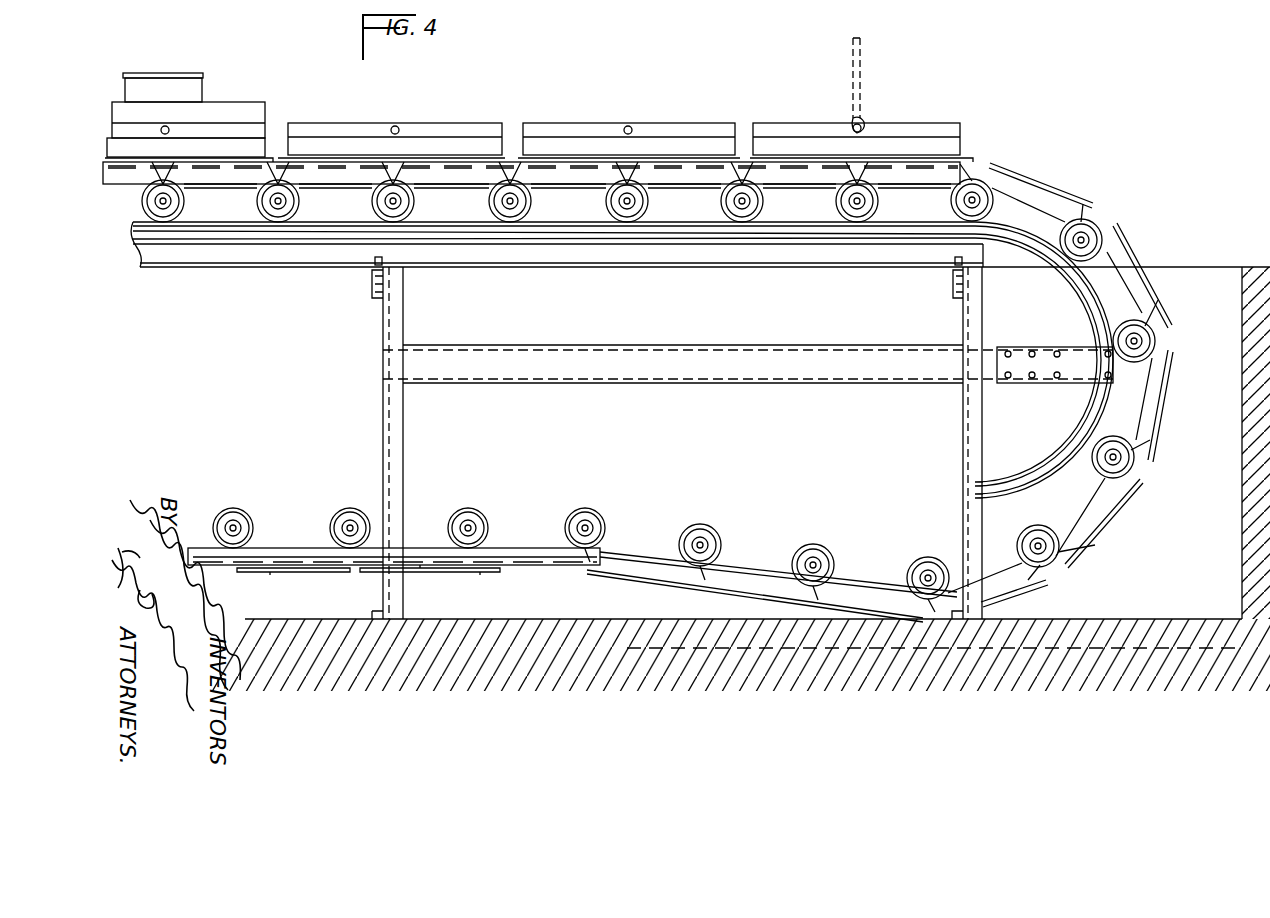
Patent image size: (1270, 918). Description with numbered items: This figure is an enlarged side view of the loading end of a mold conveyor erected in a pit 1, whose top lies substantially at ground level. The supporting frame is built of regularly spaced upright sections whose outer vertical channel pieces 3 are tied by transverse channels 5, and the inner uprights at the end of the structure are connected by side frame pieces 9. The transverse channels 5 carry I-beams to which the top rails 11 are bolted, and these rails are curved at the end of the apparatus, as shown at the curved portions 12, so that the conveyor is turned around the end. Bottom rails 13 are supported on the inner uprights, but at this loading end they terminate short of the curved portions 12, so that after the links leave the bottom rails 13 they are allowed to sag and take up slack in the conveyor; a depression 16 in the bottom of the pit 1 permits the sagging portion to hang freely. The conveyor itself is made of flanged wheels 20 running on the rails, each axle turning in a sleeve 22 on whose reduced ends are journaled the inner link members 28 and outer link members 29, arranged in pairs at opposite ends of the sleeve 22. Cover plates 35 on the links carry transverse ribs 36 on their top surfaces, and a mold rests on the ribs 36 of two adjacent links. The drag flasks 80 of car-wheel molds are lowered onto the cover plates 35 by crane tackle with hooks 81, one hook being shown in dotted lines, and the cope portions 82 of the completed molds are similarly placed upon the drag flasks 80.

The pit 1 is at (1235, 290).
The outer vertical channel pieces 3 is at (394, 420).
The transverse channels 5 is at (372, 284).
The side frame pieces 9 is at (690, 352).
The top rails 11 is at (676, 232).
The curved portions of the top rails 12 is at (1098, 410).
The bottom rails 13 is at (284, 548).
The depression 16 is at (667, 647).
The flanged wheels 20 is at (370, 204).
The sleeve 22 is at (834, 203).
The inner link members 28 is at (464, 174).
The outer link members 29 is at (580, 174).
The cover plates 35 is at (988, 172).
The transverse ribs 36 is at (1064, 192).
The drag flasks 80 is at (232, 147).
The hooks 81 is at (862, 85).
The cope portions 82 is at (224, 116).